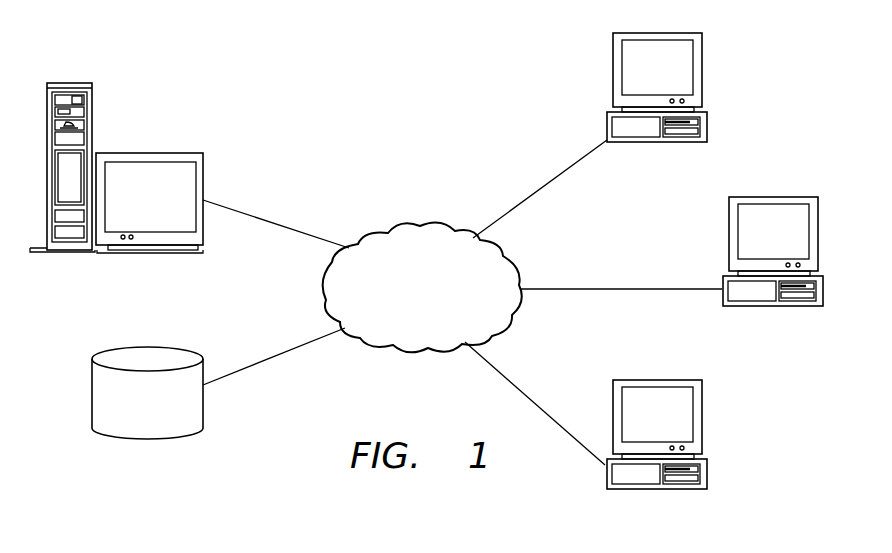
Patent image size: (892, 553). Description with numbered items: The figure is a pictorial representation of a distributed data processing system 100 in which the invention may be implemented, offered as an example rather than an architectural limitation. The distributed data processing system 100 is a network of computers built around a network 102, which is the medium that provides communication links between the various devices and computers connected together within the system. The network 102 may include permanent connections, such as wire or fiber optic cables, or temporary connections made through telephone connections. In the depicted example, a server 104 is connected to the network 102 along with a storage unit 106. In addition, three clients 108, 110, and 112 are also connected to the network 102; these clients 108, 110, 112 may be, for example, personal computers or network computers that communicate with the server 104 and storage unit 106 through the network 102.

The distributed data processing system 100 is at (297, 77).
The network 102 is at (443, 301).
The server 104 is at (91, 107).
The storage unit 106 is at (92, 393).
The client 108 is at (702, 79).
The client 110 is at (803, 251).
The client 112 is at (688, 434).